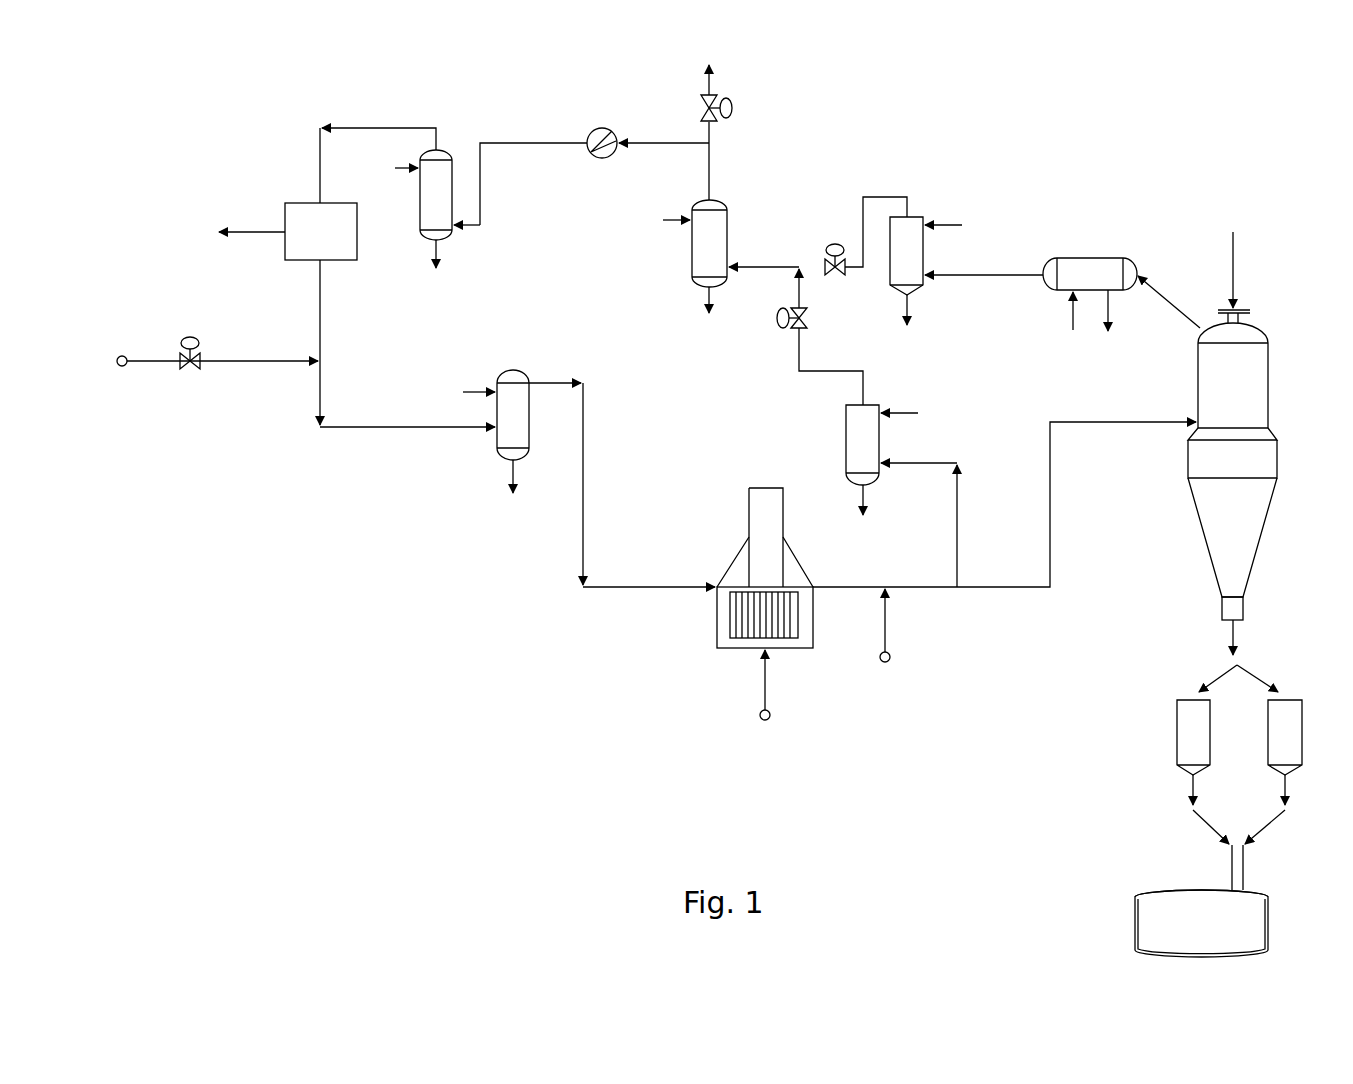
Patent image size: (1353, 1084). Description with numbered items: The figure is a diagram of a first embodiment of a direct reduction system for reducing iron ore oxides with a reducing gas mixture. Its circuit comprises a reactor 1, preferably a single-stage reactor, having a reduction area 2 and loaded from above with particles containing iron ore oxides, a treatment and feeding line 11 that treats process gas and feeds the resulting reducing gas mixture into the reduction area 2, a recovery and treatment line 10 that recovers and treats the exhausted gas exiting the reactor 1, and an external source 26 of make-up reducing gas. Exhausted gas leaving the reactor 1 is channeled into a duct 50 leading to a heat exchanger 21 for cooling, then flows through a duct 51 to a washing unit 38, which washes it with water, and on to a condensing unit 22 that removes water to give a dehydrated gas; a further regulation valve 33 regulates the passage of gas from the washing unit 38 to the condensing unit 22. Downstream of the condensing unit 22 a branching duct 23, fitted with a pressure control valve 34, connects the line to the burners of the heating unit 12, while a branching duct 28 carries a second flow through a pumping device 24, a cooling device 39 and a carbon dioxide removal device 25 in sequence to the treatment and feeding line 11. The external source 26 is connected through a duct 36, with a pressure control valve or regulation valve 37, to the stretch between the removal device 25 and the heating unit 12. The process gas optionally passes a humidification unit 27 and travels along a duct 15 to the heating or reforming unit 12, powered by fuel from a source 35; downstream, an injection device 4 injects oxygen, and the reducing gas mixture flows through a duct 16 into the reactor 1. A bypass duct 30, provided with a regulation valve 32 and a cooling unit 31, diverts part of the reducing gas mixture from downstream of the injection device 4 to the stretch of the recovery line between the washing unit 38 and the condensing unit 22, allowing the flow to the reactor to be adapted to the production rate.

The reactor 1 is at (1277, 379).
The reduction area 2 is at (1232, 387).
The injection device 4 is at (886, 630).
The recovery and treatment line 10 is at (303, 174).
The treatment and feeding line 11 is at (304, 401).
The heating unit or reforming unit 12 is at (815, 612).
The duct 15 is at (383, 430).
The duct 16 is at (1050, 455).
The heat exchanger 21 is at (1105, 258).
The condensing unit 22 is at (692, 276).
The branching duct 23 is at (703, 98).
The pumping device 24 is at (603, 128).
The removal device 25 is at (285, 246).
The external source 26 is at (121, 354).
The process gas humidification unit 27 is at (497, 444).
The branching duct 28 is at (360, 127).
The bypass duct 30 is at (838, 371).
The cooling unit 31 is at (868, 403).
The regulation valve 32 is at (779, 327).
The further regulation valve 33 is at (832, 243).
The pressure control valve 34 is at (729, 98).
The source 35 is at (770, 716).
The duct 36 is at (160, 362).
The pressure control valve or regulation valve 37 is at (190, 334).
The washing unit 38 is at (890, 278).
The cooling device 39 is at (420, 218).
The duct 50 is at (1173, 302).
The duct 51 is at (777, 262).